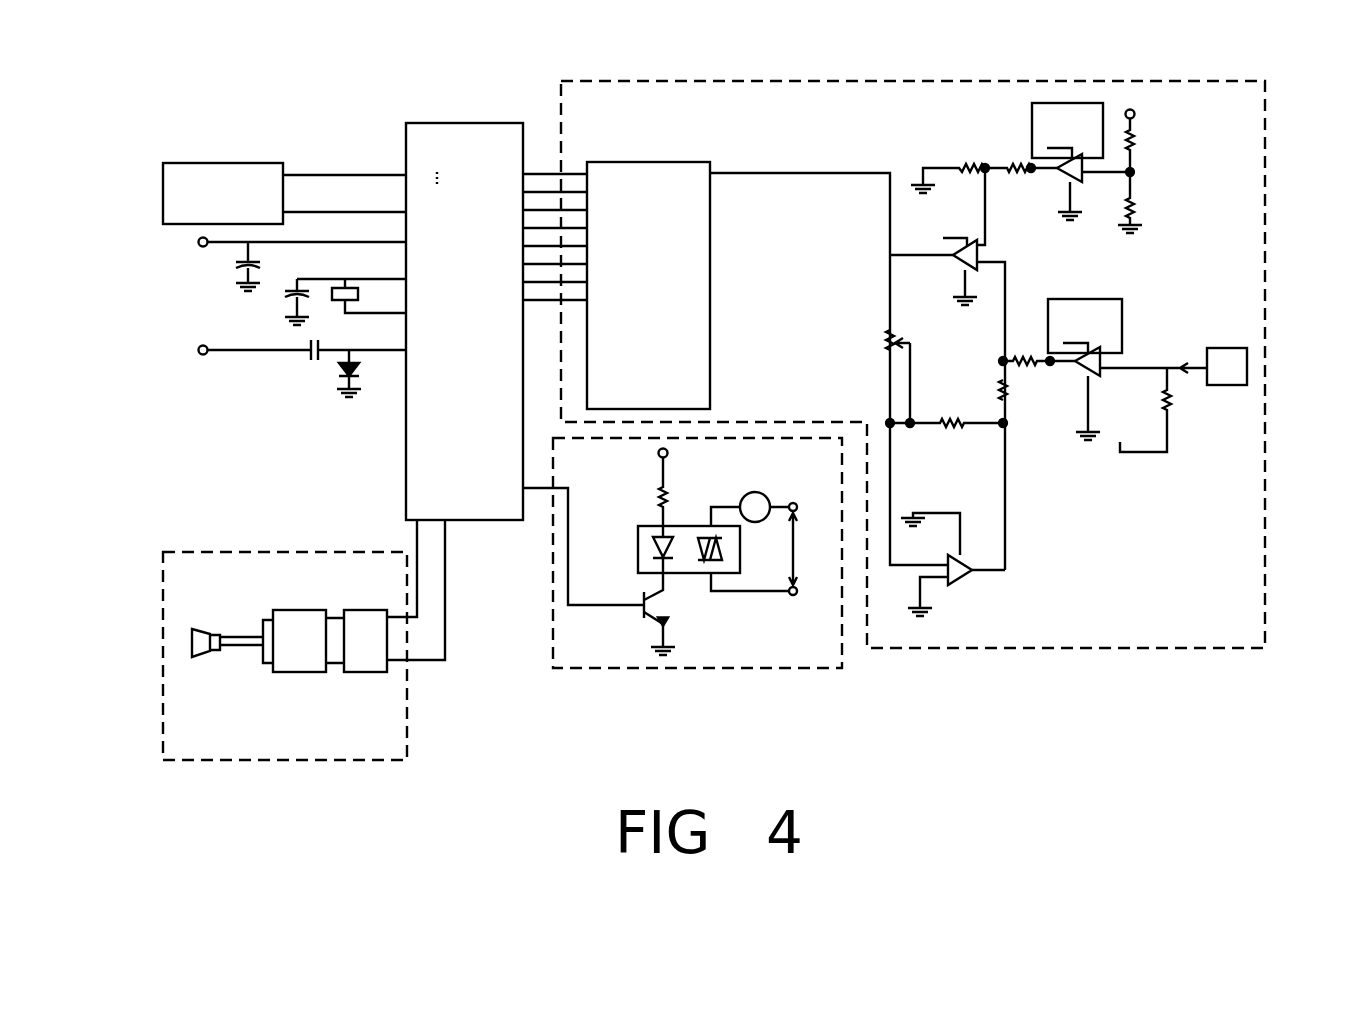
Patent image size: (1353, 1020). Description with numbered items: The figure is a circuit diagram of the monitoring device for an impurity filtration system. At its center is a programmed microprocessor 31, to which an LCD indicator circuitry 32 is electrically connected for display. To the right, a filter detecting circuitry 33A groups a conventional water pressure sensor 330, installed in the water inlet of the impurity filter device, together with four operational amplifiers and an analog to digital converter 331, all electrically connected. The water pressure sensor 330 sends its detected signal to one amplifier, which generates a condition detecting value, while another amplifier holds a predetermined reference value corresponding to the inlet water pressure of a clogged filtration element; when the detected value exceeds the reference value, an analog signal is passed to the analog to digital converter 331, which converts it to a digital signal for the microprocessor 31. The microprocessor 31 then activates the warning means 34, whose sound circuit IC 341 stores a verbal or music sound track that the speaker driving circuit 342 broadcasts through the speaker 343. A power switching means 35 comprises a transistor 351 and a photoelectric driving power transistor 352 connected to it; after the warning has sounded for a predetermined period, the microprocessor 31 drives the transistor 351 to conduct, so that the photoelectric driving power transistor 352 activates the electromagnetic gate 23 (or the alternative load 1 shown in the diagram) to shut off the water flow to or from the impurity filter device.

The microprocessor 31 is at (475, 123).
The LCD indicator circuitry 32 is at (222, 172).
The filter detecting circuitry 33A is at (957, 404).
The water pressure sensor 330 is at (1228, 368).
The analog to digital converter 331 is at (690, 258).
The warning means 34 is at (304, 615).
The sound circuit IC 341 is at (380, 665).
The speaker driving circuit 342 is at (296, 672).
The speaker 343 is at (198, 633).
The power switching means 35 is at (675, 587).
The transistor 351 is at (670, 626).
The photoelectric driving power transistor 352 is at (683, 565).
The load 1 is at (782, 472).
The electromagnetic gate 23 is at (769, 521).